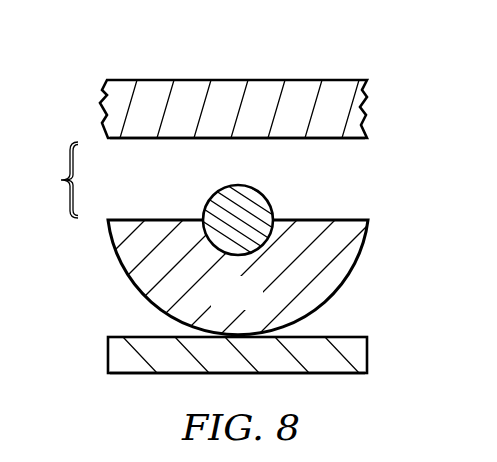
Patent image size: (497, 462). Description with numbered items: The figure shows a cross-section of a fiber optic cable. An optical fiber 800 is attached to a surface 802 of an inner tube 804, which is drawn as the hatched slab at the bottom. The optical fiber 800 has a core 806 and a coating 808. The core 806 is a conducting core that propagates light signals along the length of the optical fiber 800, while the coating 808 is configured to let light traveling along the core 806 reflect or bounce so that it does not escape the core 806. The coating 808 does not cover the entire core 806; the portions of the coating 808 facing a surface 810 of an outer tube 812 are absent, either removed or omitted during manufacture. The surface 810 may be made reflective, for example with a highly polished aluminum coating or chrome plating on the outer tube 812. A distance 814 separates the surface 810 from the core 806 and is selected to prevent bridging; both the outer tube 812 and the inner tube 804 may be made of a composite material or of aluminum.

The optical fiber 800 is at (119, 264).
The surface 802 is at (345, 334).
The inner tube 804 is at (338, 373).
The core 806 is at (210, 203).
The coating 808 is at (258, 307).
The surface 810 is at (295, 140).
The outer tube 812 is at (198, 80).
The distance 814 is at (47, 180).